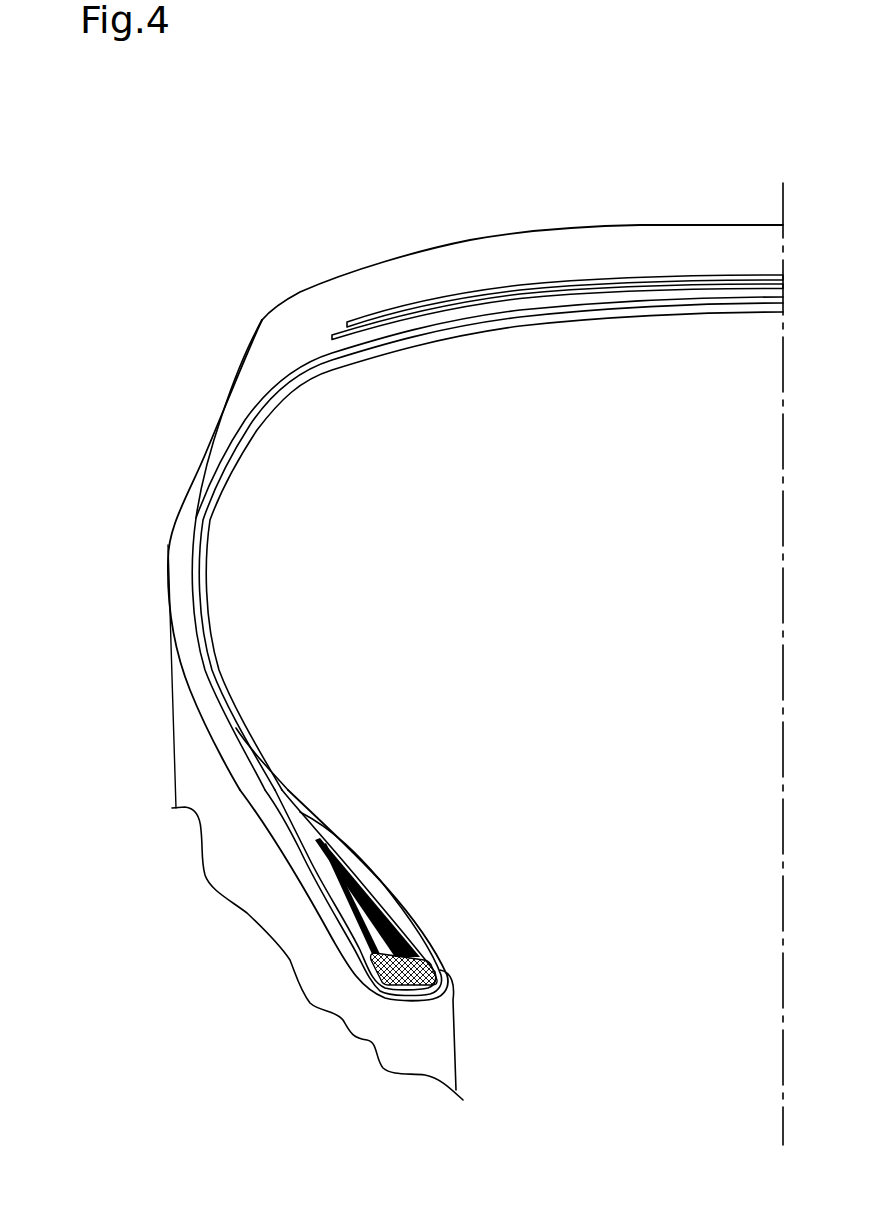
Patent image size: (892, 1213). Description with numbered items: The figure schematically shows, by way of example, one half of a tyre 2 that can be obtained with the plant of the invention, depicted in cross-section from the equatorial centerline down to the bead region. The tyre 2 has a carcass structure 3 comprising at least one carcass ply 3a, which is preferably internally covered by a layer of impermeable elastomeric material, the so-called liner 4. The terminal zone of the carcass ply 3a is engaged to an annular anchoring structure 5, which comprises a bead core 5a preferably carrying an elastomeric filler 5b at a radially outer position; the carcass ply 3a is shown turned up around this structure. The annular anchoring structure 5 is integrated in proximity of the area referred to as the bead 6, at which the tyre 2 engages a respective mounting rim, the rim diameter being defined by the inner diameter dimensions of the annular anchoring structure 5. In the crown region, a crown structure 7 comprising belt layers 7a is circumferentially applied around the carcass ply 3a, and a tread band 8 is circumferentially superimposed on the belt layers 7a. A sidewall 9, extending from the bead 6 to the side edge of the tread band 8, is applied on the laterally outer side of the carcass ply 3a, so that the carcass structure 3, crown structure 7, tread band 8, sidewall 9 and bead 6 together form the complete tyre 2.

The tyre 2 is at (416, 543).
The carcass structure 3 is at (333, 827).
The carcass ply 3a is at (238, 731).
The liner 4 is at (363, 360).
The annular anchoring structure 5 is at (354, 889).
The bead core 5a is at (432, 972).
The elastomeric filler 5b is at (350, 905).
The bead 6 is at (430, 913).
The crown structure 7 is at (557, 215).
The belt layer 7a is at (563, 287).
The tread band 8 is at (653, 242).
The sidewall 9 is at (185, 517).